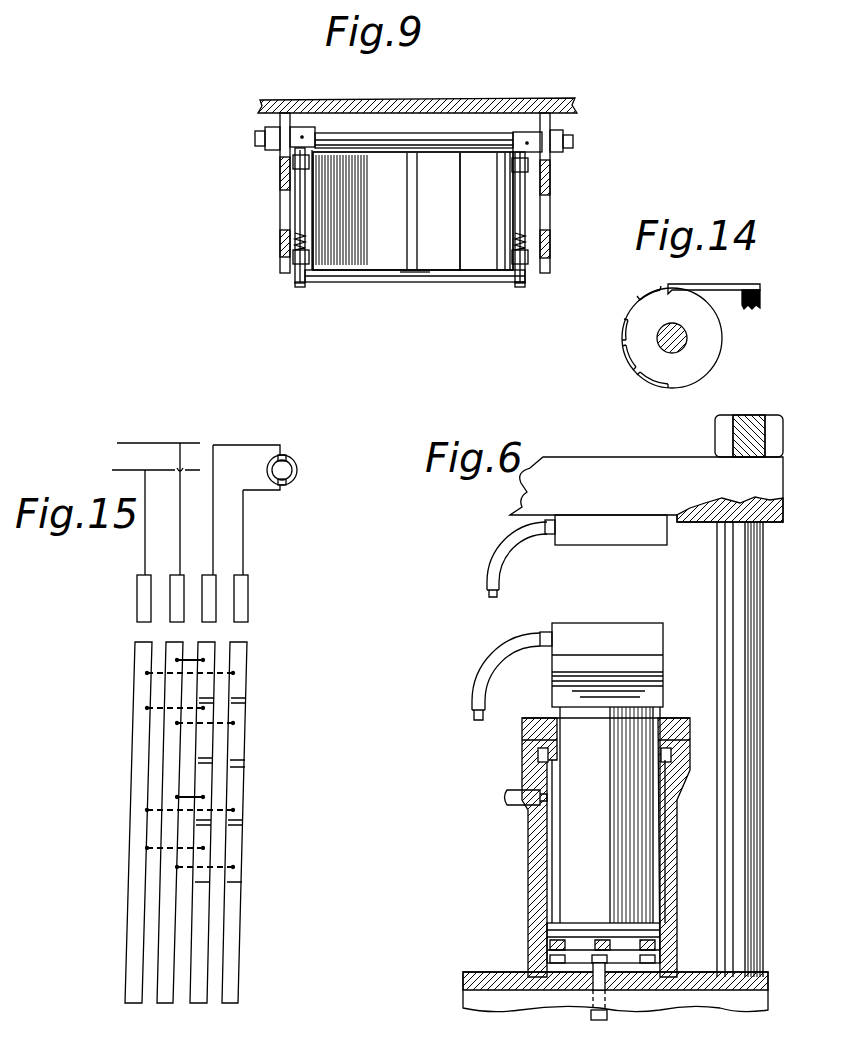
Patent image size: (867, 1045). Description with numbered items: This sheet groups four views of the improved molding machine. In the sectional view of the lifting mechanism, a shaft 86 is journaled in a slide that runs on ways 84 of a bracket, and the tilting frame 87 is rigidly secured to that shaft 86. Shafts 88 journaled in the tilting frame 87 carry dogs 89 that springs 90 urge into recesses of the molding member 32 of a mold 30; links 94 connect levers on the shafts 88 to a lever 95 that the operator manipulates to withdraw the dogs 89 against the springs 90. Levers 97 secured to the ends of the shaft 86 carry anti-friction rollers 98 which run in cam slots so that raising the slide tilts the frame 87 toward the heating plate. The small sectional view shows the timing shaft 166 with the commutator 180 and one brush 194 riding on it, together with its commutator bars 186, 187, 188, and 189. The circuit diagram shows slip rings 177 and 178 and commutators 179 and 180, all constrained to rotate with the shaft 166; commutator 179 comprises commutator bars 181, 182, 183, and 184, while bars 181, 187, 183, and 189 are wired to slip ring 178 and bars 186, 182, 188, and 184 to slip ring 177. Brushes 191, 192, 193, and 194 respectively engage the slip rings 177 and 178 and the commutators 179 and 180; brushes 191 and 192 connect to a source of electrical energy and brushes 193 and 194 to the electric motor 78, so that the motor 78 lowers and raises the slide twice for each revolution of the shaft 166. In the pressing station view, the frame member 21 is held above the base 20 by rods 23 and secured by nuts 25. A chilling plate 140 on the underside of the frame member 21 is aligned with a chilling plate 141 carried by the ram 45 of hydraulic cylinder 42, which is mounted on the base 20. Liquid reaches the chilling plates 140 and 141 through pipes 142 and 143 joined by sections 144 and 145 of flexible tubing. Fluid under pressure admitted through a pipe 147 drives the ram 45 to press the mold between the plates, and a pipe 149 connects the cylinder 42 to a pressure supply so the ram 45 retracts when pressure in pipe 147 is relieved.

In FIG. 9, the shaft 86 is at (423, 140).
In FIG. 9, the ways 84 is at (285, 122).
In FIG. 9, the levers 97 is at (268, 134).
In FIG. 9, the anti-friction rollers 98 is at (255, 140).
In FIG. 9, the dogs 89 is at (300, 163).
In FIG. 9, the shafts 88 is at (300, 210).
In FIG. 9, the springs 90 is at (300, 245).
In FIG. 9, the tilting frame 87 is at (290, 276).
In FIG. 9, the links 94 is at (343, 276).
In FIG. 9, the mold 30 is at (397, 260).
In FIG. 9, the lever 95 is at (415, 276).
In FIG. 9, the molding member 32 is at (445, 255).
In FIG. 14, the commutator bar 186 is at (652, 300).
In FIG. 15, the commutator bar 186 is at (240, 656).
In FIG. 14, the commutator bar 187 is at (628, 320).
In FIG. 15, the commutator bar 187 is at (238, 732).
In FIG. 14, the shaft 166 is at (660, 340).
In FIG. 14, the commutator bar 188 is at (628, 365).
In FIG. 15, the commutator bar 188 is at (238, 818).
In FIG. 14, the commutator bar 189 is at (650, 385).
In FIG. 15, the commutator bar 189 is at (237, 875).
In FIG. 14, the commutator 180 is at (705, 352).
In FIG. 15, the commutator 180 is at (236, 978).
In FIG. 14, the brush 194 is at (740, 284).
In FIG. 15, the brush 194 is at (245, 598).
In FIG. 15, the electric motor 78 is at (297, 470).
In FIG. 15, the brush 191 is at (140, 603).
In FIG. 15, the brush 192 is at (175, 583).
In FIG. 15, the brush 193 is at (208, 585).
In FIG. 15, the slip ring 177 is at (136, 877).
In FIG. 15, the slip ring 178 is at (163, 910).
In FIG. 15, the commutator 179 is at (205, 945).
In FIG. 15, the commutator bar 181 is at (210, 648).
In FIG. 15, the commutator bar 182 is at (208, 715).
In FIG. 15, the commutator bar 183 is at (205, 792).
In FIG. 15, the commutator bar 184 is at (203, 857).
In FIG. 6, the frame member 21 is at (640, 470).
In FIG. 6, the nuts 25 is at (755, 440).
In FIG. 6, the rods 23 is at (740, 580).
In FIG. 6, the section of flexible tubing 144 is at (487, 558).
In FIG. 6, the pipe 142 is at (487, 590).
In FIG. 6, the chilling plate 140 is at (612, 537).
In FIG. 6, the chilling plate 141 is at (608, 633).
In FIG. 6, the section of flexible tubing 145 is at (480, 675).
In FIG. 6, the pipe 143 is at (474, 713).
In FIG. 6, the pipe 149 is at (507, 795).
In FIG. 6, the ram 45 is at (578, 822).
In FIG. 6, the hydraulic cylinder 42 is at (535, 897).
In FIG. 6, the base 20 is at (478, 990).
In FIG. 6, the pipe 147 is at (592, 1015).